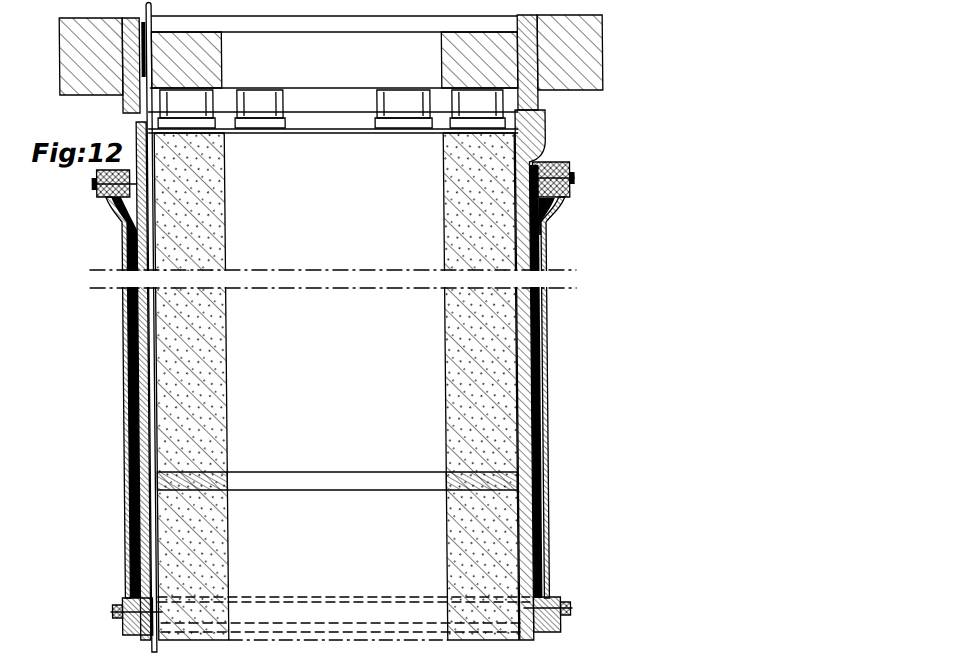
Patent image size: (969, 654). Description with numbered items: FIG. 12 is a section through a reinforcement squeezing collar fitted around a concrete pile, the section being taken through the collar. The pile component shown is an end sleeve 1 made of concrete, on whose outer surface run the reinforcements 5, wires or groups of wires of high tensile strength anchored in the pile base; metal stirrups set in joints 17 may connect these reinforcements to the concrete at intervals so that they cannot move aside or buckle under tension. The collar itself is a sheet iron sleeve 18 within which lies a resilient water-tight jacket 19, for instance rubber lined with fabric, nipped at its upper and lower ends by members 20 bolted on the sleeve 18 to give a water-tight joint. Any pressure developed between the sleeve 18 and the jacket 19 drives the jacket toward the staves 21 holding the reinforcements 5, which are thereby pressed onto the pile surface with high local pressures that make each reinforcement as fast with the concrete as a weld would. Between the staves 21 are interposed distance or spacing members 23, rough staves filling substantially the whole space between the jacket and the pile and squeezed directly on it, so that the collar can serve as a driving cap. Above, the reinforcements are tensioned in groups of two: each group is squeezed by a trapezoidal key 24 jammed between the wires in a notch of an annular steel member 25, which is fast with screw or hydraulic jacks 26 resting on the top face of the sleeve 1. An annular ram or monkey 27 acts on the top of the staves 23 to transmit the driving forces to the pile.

The end sleeve 1 is at (187, 225).
The reinforcements 5 is at (128, 316).
The joints 17 is at (125, 480).
The sheet iron sleeve 18 is at (547, 355).
The resilient water-tight jacket 19 is at (543, 408).
The members 20 is at (546, 158).
The staves 21 is at (125, 362).
The distance or spacing members 23 is at (547, 125).
The trapezoidal key 24 is at (107, 31).
The steel member 25 is at (208, 39).
The screw or hydraulic jacks 26 is at (217, 87).
The annular ram or monkey 27 is at (590, 50).